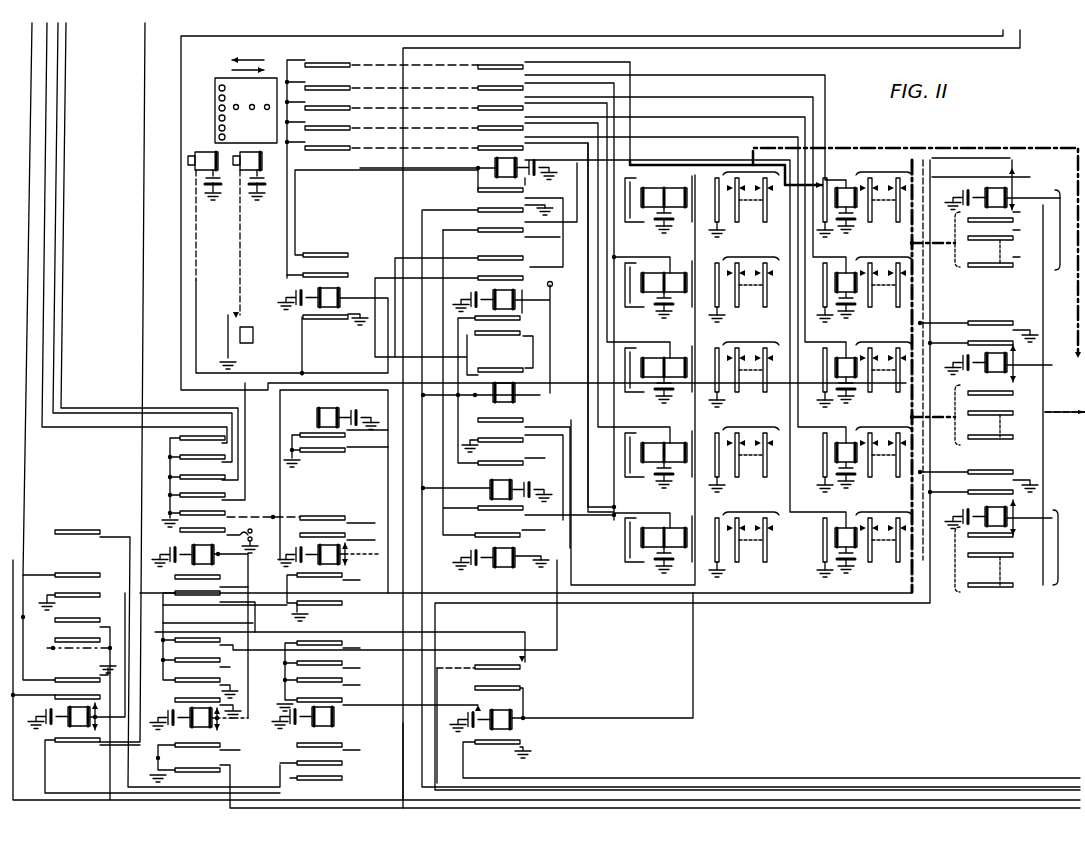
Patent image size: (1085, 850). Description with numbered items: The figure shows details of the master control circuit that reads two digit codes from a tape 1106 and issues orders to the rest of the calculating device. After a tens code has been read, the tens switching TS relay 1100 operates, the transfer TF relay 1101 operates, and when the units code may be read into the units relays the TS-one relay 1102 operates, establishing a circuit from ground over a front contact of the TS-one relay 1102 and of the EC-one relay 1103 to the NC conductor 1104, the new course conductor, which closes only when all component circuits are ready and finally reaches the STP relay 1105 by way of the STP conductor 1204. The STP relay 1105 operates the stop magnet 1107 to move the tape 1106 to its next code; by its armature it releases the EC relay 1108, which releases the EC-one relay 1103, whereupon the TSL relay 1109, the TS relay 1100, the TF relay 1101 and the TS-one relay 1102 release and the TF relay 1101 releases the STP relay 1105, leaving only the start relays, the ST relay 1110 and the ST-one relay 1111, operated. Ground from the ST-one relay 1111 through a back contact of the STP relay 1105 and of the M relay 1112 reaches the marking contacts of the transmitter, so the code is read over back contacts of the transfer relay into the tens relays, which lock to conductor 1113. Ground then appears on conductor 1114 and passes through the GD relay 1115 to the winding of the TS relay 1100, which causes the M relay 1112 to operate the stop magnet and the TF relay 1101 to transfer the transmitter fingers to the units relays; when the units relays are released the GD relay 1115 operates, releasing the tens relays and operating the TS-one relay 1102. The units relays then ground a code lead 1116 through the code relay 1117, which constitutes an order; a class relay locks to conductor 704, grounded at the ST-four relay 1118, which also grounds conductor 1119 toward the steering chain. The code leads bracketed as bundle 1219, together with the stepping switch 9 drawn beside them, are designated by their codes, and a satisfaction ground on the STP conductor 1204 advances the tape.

The conductor 704 is at (977, 48).
The tens switching TS relay 1100 is at (474, 279).
The transfer TF relay 1101 is at (493, 166).
The TS-1 relay 1102 is at (515, 398).
The EC-1 relay 1103 is at (334, 716).
The NC conductor 1104 is at (833, 40).
The STP relay 1105 is at (340, 554).
The tape 1106 is at (267, 76).
The stop magnet 1107 is at (203, 152).
The EC relay 1108 is at (512, 716).
The TSL relay 1109 is at (490, 568).
The ST relay 1110 is at (218, 722).
The ST-1 relay 1111 is at (190, 545).
The M relay 1112 is at (339, 300).
The conductor 1113 is at (578, 518).
The conductor 1114 is at (620, 586).
The GD relay 1115 is at (490, 485).
The code lead 1116 is at (1042, 256).
The code relay 1117 is at (1012, 182).
The ST-4 relay 1118 is at (317, 412).
The conductor 1119 is at (336, 451).
The STP conductor 1204 is at (420, 613).
The bundle 1219 is at (1048, 416).
The stepping switch 9 is at (988, 531).